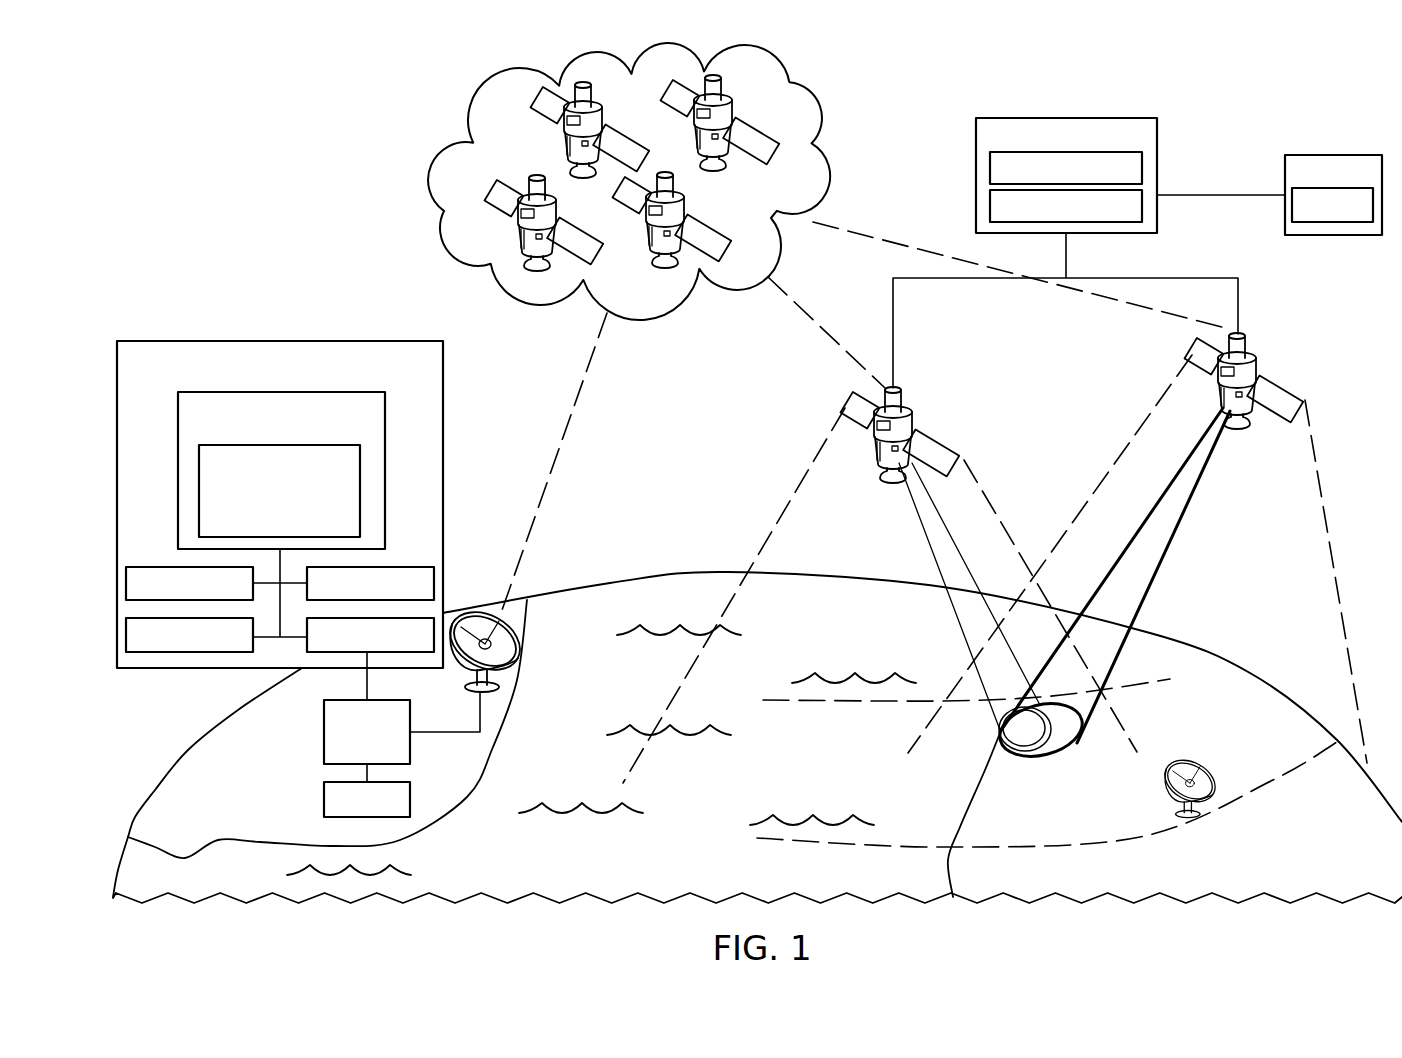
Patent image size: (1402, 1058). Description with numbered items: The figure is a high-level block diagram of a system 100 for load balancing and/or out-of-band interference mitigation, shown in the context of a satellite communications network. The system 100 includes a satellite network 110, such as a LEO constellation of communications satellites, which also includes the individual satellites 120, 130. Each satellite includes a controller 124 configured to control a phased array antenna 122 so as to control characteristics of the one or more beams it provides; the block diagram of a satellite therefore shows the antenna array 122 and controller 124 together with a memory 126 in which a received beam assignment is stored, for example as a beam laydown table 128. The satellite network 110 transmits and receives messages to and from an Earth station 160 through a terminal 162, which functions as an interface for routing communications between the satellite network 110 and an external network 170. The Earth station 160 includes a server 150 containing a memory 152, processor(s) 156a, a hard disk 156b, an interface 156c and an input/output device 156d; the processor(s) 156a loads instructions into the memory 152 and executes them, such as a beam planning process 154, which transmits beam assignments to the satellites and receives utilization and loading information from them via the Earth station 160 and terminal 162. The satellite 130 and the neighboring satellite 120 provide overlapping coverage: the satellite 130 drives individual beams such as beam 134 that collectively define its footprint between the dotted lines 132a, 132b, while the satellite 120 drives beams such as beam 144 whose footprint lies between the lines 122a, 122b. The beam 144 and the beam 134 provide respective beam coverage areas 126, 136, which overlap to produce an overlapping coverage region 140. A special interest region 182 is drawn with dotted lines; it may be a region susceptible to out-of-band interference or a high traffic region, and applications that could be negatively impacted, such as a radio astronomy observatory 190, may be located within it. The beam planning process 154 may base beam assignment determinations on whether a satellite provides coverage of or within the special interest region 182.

The system 100 is at (253, 137).
The satellite network 110 is at (428, 173).
The satellite 120 is at (1157, 137).
The phased array antenna 122 is at (1142, 166).
The line 122a is at (778, 507).
The line 122b is at (987, 495).
The controller 124 is at (1142, 206).
The memory 126 is at (1335, 155).
The beam laydown table 128 is at (1330, 222).
The satellite 130 is at (1257, 352).
The dotted line 132a is at (1142, 425).
The dotted line 132b is at (1318, 470).
The beam 134 is at (1125, 580).
The beam coverage area 136 is at (1065, 728).
The overlapping coverage region 140 is at (1035, 730).
The beam 144 is at (937, 565).
The server 150 is at (284, 341).
The memory 152 is at (345, 392).
The beam planning process 154 is at (203, 445).
The processor(s) 156a is at (155, 567).
The hard disk 156b is at (185, 652).
The interface 156c is at (434, 585).
The input/output device 156d is at (325, 652).
The Earth station 160 is at (324, 748).
The terminal 162 is at (520, 652).
The external network 170 is at (324, 800).
The special interest region 182 is at (1167, 700).
The radio astronomy observatory 190 is at (1195, 818).